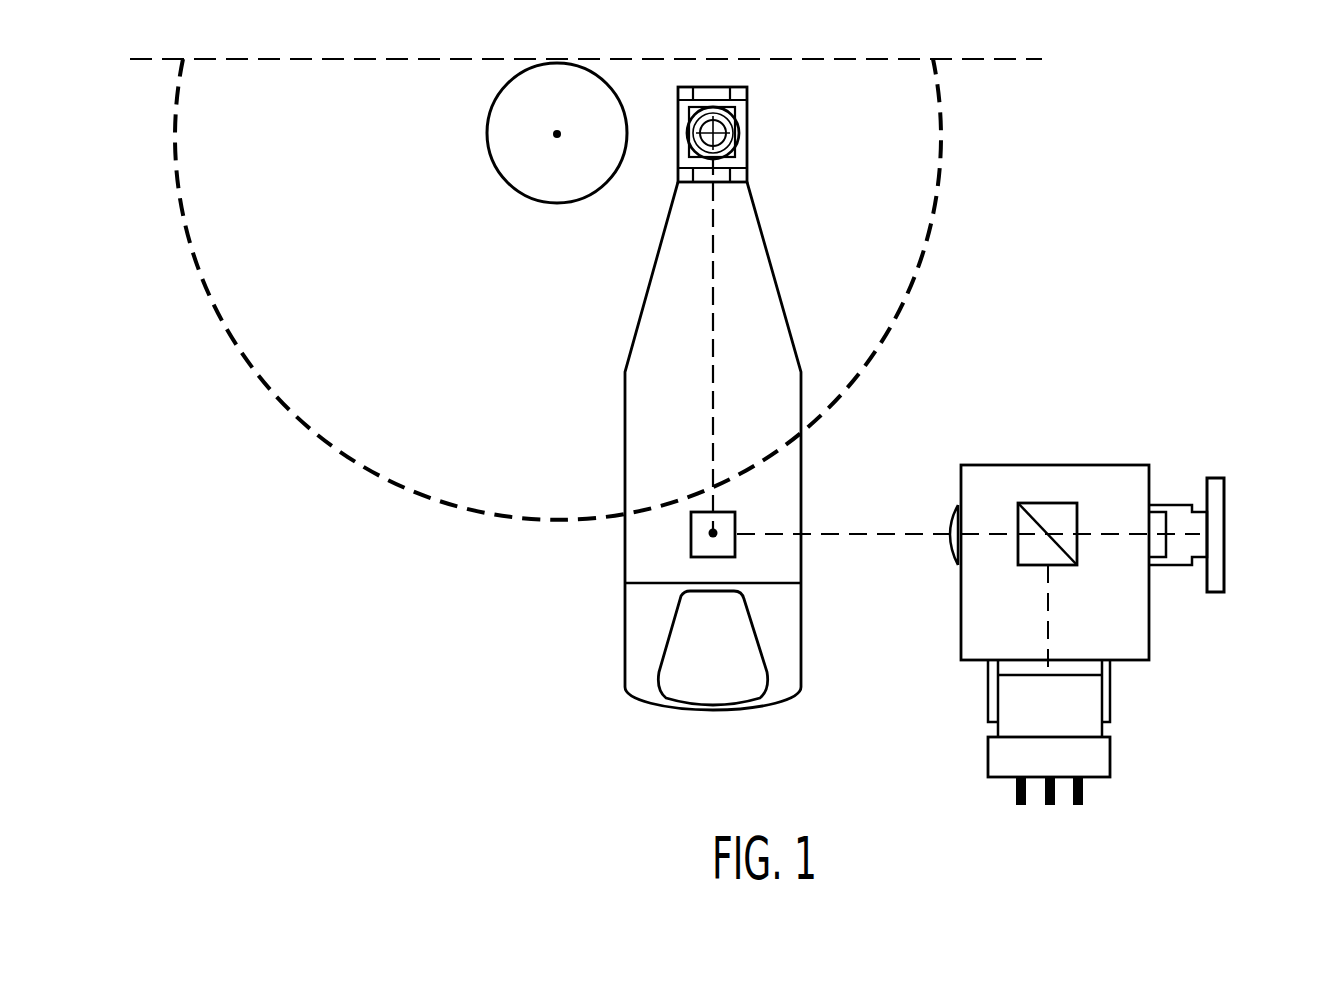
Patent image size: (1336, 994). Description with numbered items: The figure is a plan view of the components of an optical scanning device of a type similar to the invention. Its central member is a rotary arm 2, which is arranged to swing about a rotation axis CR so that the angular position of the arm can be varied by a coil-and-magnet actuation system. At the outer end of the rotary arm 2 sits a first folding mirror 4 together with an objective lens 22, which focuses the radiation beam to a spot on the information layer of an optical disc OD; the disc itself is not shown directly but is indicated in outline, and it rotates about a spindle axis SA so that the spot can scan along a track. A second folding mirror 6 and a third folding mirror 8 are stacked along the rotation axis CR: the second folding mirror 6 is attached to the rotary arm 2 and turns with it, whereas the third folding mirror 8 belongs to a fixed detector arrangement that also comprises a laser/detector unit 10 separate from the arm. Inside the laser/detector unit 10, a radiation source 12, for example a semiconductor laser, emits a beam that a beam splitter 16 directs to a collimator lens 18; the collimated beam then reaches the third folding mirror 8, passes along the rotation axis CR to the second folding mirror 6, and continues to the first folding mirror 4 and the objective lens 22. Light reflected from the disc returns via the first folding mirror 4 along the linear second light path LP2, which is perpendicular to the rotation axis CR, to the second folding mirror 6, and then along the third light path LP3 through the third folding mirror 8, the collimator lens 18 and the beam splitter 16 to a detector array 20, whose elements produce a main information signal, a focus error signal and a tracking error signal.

The rotary arm 2 is at (648, 571).
The first folding mirror 4 is at (736, 97).
The second folding mirror 6 is at (654, 537).
The third folding mirror 8 is at (690, 544).
The laser/detector unit 10 is at (988, 465).
The radiation source 12 is at (1090, 757).
The beam splitter 16 is at (1046, 503).
The collimator lens 18 is at (955, 568).
The detector array 20 is at (1215, 500).
The objective lens 22 is at (737, 130).
The spindle axis SA is at (557, 134).
The optical disc OD is at (920, 174).
The second light path LP2 is at (713, 226).
The third light path LP3 is at (1115, 534).
The rotation axis CR is at (716, 531).